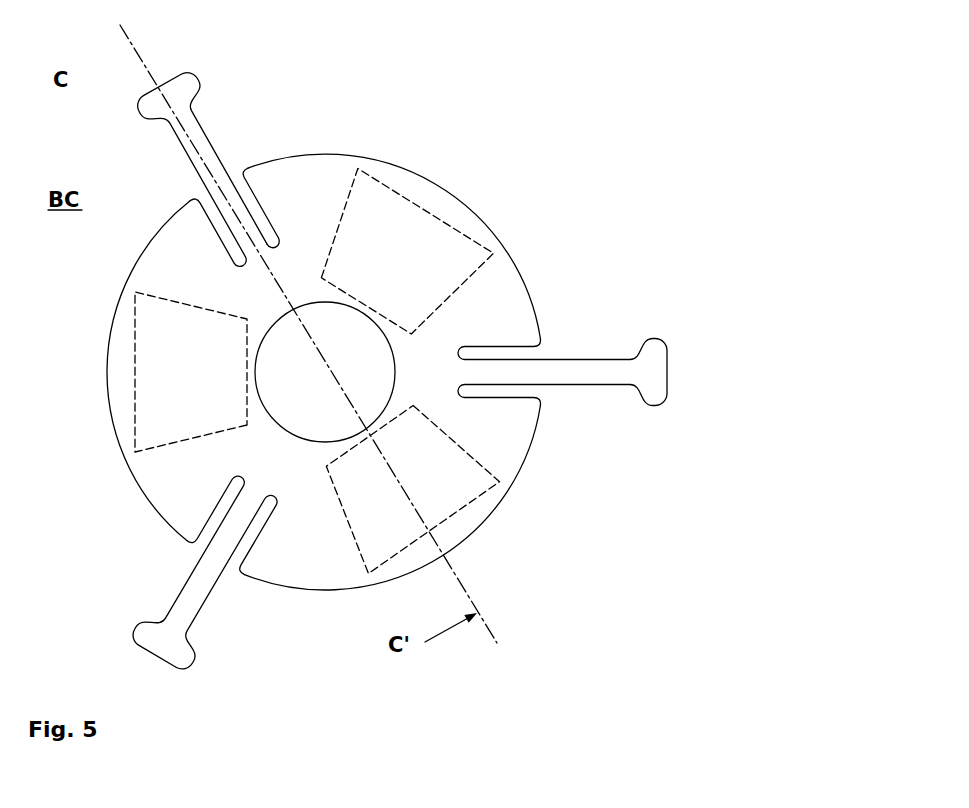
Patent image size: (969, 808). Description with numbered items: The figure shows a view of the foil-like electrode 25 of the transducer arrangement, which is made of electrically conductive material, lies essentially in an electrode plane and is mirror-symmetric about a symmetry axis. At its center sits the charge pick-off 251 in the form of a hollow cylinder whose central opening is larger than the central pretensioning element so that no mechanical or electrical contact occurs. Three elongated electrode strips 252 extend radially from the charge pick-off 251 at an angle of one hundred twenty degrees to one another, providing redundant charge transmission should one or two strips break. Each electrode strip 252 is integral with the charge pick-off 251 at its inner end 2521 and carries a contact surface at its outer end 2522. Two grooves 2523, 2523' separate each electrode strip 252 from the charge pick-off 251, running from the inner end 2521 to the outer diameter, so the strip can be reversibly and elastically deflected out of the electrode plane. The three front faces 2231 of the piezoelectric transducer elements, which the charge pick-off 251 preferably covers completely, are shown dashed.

The electrode 25 is at (540, 176).
The charge pick-off 251 is at (330, 551).
The electrode strip 252 is at (572, 370).
The inner end 2521 is at (270, 250).
The outer end 2522 is at (180, 90).
The groove 2523 is at (238, 196).
The groove 2523' is at (294, 168).
The front face 2231 is at (375, 185).